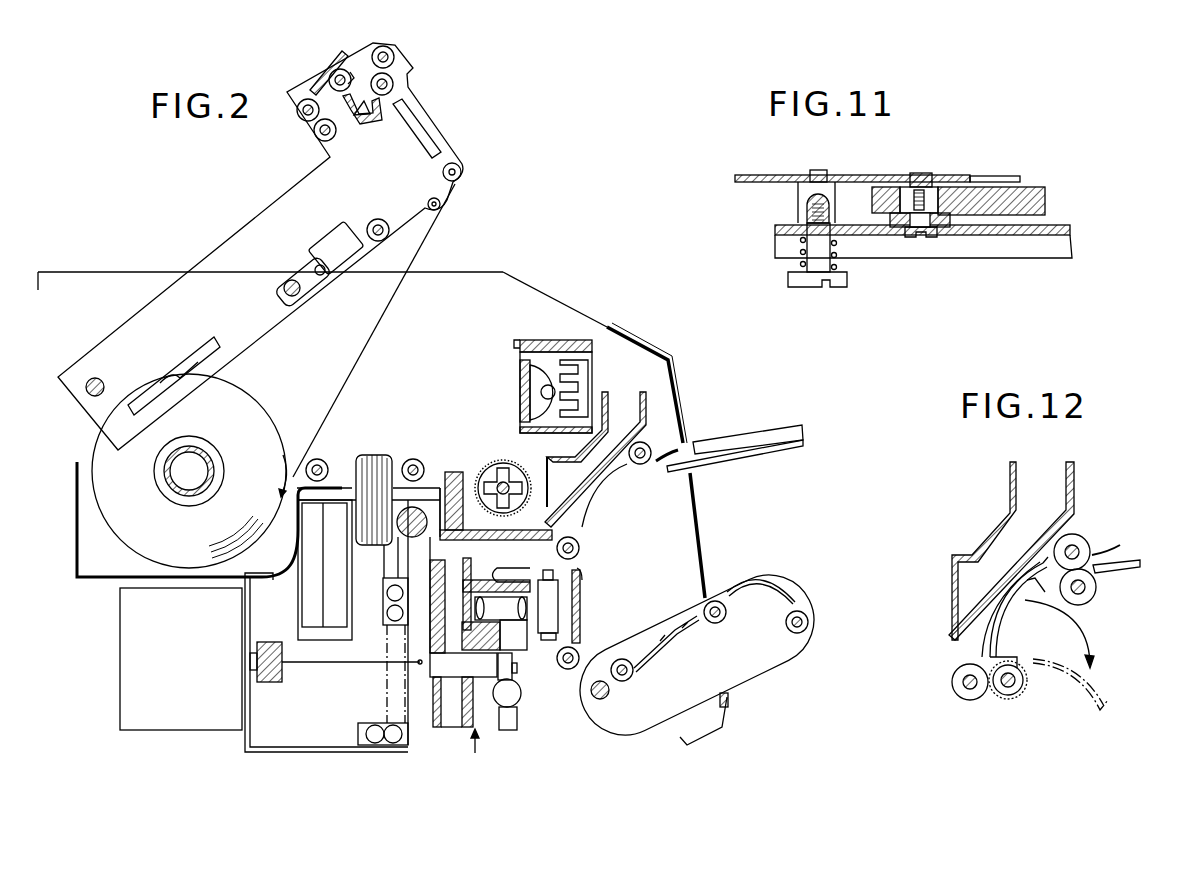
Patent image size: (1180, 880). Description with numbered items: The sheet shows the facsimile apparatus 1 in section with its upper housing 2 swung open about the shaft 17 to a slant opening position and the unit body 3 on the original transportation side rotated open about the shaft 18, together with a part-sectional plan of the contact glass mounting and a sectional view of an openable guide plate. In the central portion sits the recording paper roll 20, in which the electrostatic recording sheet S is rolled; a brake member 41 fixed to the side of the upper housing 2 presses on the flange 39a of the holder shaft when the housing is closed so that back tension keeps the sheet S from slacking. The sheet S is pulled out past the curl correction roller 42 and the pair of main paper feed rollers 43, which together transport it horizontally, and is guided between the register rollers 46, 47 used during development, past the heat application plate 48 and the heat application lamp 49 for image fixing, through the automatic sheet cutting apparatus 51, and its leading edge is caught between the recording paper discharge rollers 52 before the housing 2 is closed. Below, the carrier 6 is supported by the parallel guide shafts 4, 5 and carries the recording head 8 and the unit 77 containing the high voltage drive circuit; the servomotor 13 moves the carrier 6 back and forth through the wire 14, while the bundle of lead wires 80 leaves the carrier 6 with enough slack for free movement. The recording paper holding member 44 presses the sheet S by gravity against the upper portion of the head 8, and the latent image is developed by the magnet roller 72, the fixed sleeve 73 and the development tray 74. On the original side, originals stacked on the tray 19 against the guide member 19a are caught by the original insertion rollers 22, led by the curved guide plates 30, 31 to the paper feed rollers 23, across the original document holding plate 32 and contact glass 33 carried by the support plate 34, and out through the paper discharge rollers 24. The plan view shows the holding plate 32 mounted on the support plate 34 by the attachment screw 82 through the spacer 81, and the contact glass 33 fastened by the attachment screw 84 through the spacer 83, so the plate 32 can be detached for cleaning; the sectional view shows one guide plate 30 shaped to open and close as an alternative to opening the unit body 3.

In FIG. 2, the apparatus 1 is at (63, 276).
In FIG. 2, the upper housing 2 is at (240, 232).
In FIG. 2, the recording sheet S is at (383, 318).
In FIG. 2, the unit body 3 is at (744, 681).
In FIG. 2, the guide shaft 4 is at (414, 538).
In FIG. 2, the guide shaft 5 is at (520, 703).
In FIG. 2, the carrier 6 is at (423, 674).
In FIG. 2, the recording head 8 is at (383, 458).
In FIG. 2, the servomotor 13 is at (120, 658).
In FIG. 2, the wire 14 is at (307, 663).
In FIG. 2, the shaft 17 is at (102, 378).
In FIG. 2, the shaft 18 is at (604, 697).
In FIG. 2, the original document stacking tray 19 is at (768, 451).
In FIG. 12, the original document stacking tray 19 is at (1137, 567).
In FIG. 2, the guide member 19a is at (762, 433).
In FIG. 2, the recording paper roll 20 is at (131, 547).
In FIG. 2, the original insertion rollers 22 is at (647, 466).
In FIG. 12, the original insertion rollers 22 is at (1082, 540).
In FIG. 2, the paper feed rollers 23 is at (556, 550).
In FIG. 2, the paper discharge rollers 24 is at (562, 670).
In FIG. 12, the paper discharge rollers 24 is at (1010, 697).
In FIG. 2, the original transportation guide plate 30 is at (762, 590).
In FIG. 12, the original transportation guide plate 30 is at (998, 630).
In FIG. 2, the original transportation guide plate 31 is at (586, 512).
In FIG. 12, the original transportation guide plate 31 is at (982, 656).
In FIG. 2, the original document holding plate 32 is at (663, 643).
In FIG. 11, the original document holding plate 32 is at (1042, 258).
In FIG. 2, the contact glass 33 is at (583, 618).
In FIG. 11, the contact glass 33 is at (1045, 202).
In FIG. 11, the support plate 34 is at (752, 173).
In FIG. 2, the flange 39a is at (202, 503).
In FIG. 2, the brake member 41 is at (203, 343).
In FIG. 2, the curl correction roller 42 is at (326, 462).
In FIG. 2, the main paper feed rollers 43 is at (376, 220).
In FIG. 2, the recording paper holding member 44 is at (297, 262).
In FIG. 2, the register roller 46 is at (427, 205).
In FIG. 2, the register roller 47 is at (443, 172).
In FIG. 2, the heat application plate 48 is at (417, 140).
In FIG. 2, the heat application lamp 49 is at (540, 367).
In FIG. 2, the automatic sheet cutting apparatus 51 is at (362, 143).
In FIG. 2, the recording paper discharge rollers 52 is at (395, 60).
In FIG. 2, the magnet roller 72 is at (486, 470).
In FIG. 2, the fixed sleeve 73 is at (503, 462).
In FIG. 2, the development tray 74 is at (500, 536).
In FIG. 2, the unit 77 is at (298, 608).
In FIG. 2, the bundle of lead wires 80 is at (383, 670).
In FIG. 11, the spacer 81 is at (798, 196).
In FIG. 11, the attachment screw 82 is at (838, 288).
In FIG. 11, the spacer 83 is at (919, 173).
In FIG. 11, the attachment screw 84 is at (932, 238).